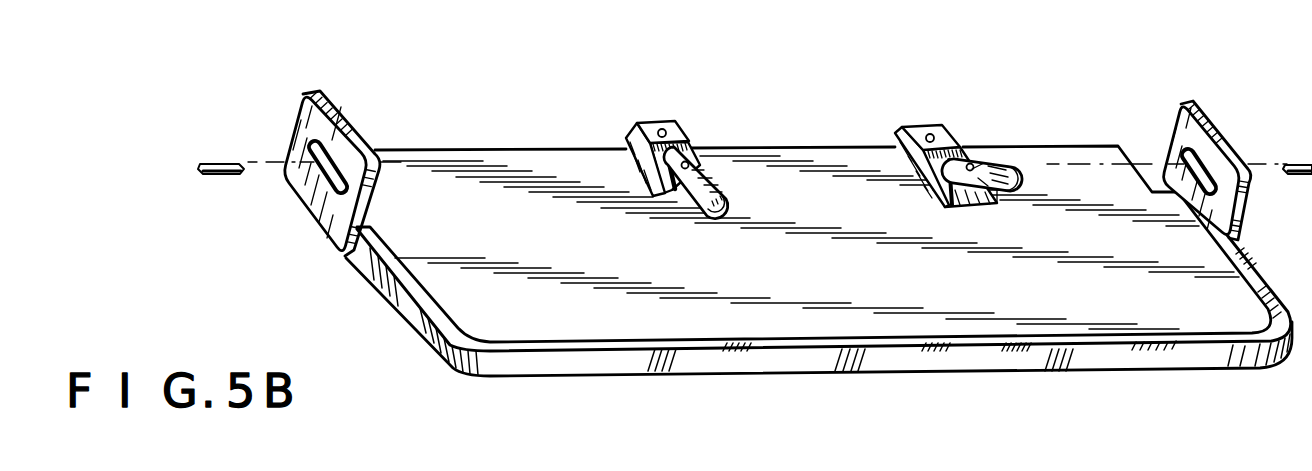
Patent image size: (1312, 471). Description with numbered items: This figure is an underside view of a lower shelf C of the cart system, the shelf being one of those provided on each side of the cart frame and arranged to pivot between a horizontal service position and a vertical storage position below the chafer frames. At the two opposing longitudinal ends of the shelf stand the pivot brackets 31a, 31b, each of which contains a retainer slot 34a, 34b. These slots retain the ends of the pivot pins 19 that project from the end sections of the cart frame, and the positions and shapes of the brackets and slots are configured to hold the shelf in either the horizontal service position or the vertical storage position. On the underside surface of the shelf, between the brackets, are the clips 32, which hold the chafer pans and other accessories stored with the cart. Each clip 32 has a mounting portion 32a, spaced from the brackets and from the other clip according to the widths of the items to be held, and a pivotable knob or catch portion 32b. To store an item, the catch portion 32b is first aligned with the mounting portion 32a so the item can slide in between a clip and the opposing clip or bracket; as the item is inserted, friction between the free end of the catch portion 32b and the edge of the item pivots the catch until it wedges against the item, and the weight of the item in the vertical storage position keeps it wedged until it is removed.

The lower shelf C is at (677, 383).
The pivot pin 19 is at (224, 163).
The pivot bracket 31a is at (337, 104).
The pivot bracket 31b is at (1178, 107).
The clip 32 is at (791, 122).
The mounting portion 32a is at (637, 131).
The catch portion 32b is at (703, 177).
The retainer slot 34a is at (327, 187).
The retainer slot 34b is at (1187, 152).